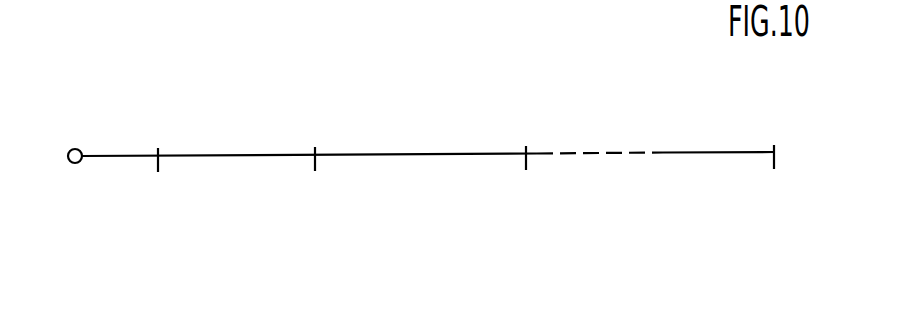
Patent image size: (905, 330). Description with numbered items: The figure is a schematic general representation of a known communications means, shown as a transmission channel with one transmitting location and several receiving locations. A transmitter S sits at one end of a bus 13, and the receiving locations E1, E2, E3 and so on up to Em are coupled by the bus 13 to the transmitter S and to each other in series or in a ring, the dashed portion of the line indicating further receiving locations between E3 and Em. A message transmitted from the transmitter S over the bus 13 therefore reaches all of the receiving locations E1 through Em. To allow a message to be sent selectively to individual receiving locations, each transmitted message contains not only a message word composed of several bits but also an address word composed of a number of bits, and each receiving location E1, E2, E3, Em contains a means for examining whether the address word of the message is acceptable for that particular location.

The bus 13 is at (737, 152).
The transmitter S is at (65, 154).
The receiving location E1 is at (157, 184).
The receiving location E2 is at (322, 184).
The receiving location E3 is at (528, 183).
The receiving location Em is at (783, 181).